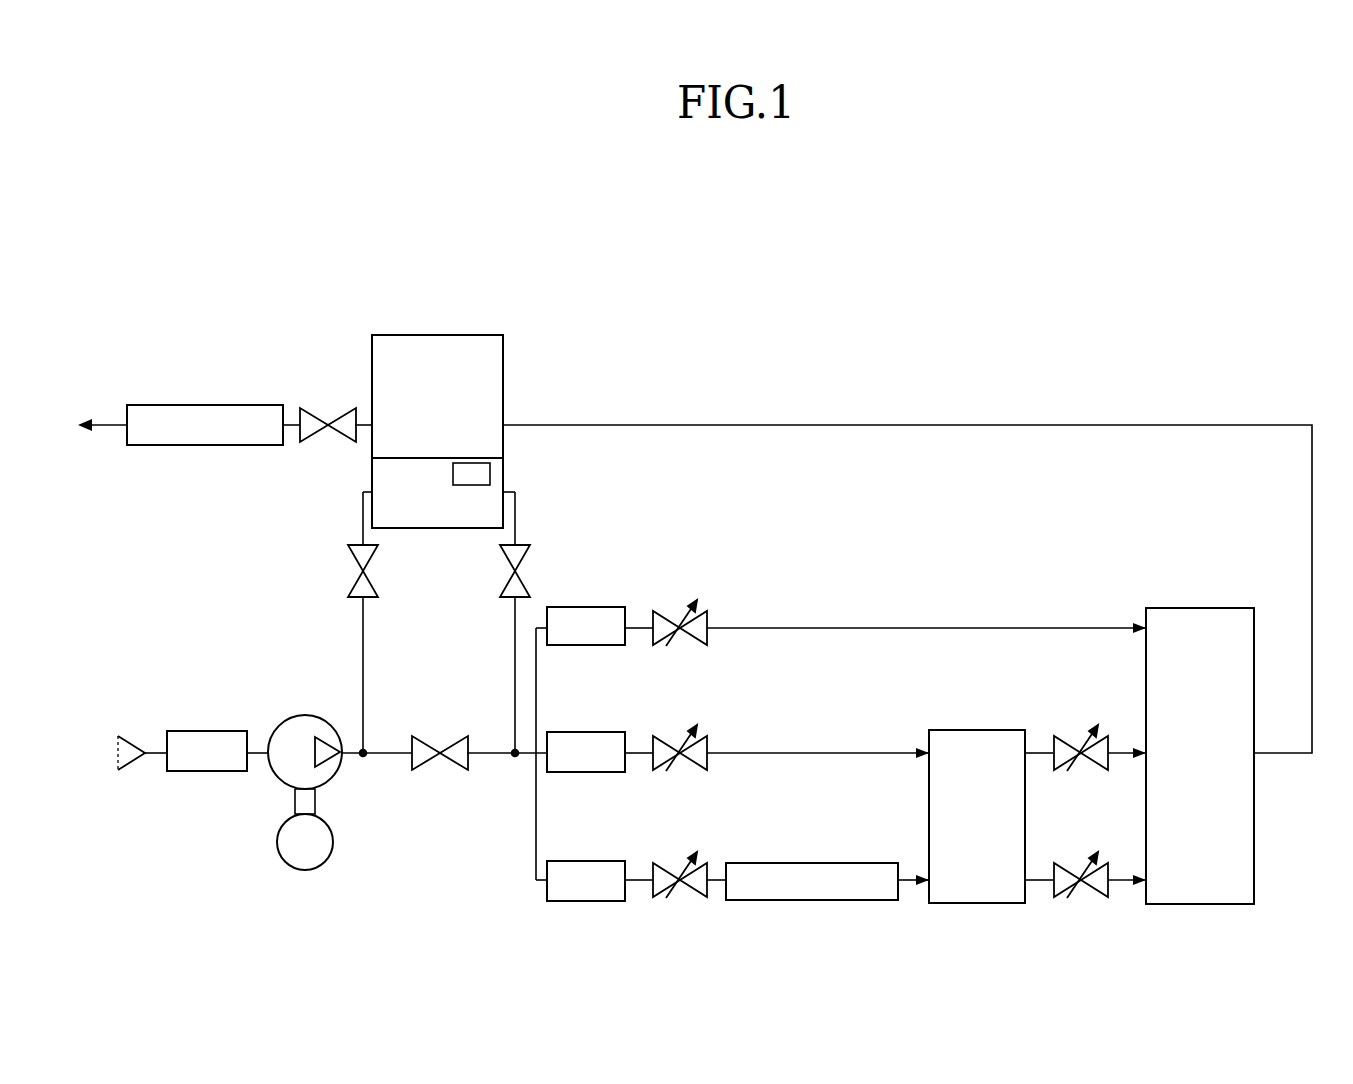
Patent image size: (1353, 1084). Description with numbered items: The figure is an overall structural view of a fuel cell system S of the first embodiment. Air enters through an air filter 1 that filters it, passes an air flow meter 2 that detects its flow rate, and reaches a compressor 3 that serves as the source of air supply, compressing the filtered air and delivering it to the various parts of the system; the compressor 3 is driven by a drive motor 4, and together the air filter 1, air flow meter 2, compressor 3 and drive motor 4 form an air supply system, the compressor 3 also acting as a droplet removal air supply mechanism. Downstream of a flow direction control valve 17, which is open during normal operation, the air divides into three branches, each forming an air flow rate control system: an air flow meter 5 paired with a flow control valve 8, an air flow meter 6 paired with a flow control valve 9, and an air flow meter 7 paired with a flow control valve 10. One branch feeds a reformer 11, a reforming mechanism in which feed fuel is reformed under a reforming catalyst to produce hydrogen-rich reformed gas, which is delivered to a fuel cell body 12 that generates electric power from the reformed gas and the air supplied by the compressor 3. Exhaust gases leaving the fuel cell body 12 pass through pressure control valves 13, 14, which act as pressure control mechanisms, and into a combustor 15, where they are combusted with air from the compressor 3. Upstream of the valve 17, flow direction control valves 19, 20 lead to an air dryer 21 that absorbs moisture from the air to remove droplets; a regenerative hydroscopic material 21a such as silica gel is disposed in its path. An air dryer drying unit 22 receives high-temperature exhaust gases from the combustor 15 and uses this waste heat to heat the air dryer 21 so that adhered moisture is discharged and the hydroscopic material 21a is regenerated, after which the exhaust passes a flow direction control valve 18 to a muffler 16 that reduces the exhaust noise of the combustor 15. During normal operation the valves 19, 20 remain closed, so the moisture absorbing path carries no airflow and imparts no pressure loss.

The fuel cell system S is at (811, 342).
The air filter 1 is at (128, 736).
The air flow meter 2 is at (230, 731).
The compressor 3 is at (306, 715).
The drive motor 4 is at (307, 871).
The air flow meter 5 is at (607, 607).
The air flow meter 6 is at (607, 732).
The air flow meter 7 is at (609, 861).
The flow control valve 8 is at (667, 612).
The flow control valve 9 is at (669, 738).
The flow control valve 10 is at (669, 865).
The reformer 11 is at (865, 863).
The fuel cell body 12 is at (980, 730).
The pressure control valve 13 is at (1067, 865).
The pressure control valve 14 is at (1067, 738).
The combustor 15 is at (1214, 608).
The muffler 16 is at (241, 405).
The flow direction control valve 17 is at (430, 744).
The flow direction control valve 18 is at (323, 411).
The flow direction control valve 19 is at (351, 547).
The flow direction control valve 20 is at (520, 548).
The air dryer 21 is at (504, 466).
The regenerative hydroscopic material 21a is at (491, 476).
The air dryer drying unit 22 is at (504, 394).